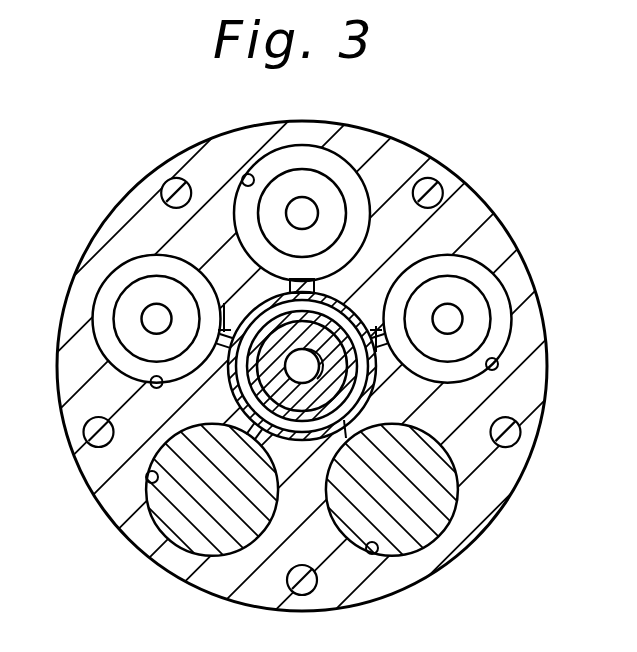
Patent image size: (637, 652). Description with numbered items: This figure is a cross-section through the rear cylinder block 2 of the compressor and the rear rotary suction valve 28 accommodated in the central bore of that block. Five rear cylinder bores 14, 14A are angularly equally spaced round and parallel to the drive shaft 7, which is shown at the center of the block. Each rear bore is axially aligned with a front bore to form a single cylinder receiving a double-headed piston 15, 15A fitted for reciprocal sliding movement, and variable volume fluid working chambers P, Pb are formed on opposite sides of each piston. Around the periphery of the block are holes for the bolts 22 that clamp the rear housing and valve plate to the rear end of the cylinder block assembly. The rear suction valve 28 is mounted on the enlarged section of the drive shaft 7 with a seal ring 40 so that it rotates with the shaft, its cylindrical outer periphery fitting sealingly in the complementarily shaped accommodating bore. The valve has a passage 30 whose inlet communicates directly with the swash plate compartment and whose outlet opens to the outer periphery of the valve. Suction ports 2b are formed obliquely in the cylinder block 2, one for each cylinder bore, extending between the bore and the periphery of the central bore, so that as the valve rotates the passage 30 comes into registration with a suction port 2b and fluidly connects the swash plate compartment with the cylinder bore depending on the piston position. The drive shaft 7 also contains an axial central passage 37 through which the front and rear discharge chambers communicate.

The rear cylinder block 2 is at (318, 326).
The suction port 2b is at (304, 372).
The drive shaft 7 is at (376, 383).
The rear cylinder bore 14 is at (319, 471).
The rear cylinder bore 14A is at (213, 147).
The double-headed piston 15 is at (318, 326).
The double-headed piston 15A is at (344, 181).
The bolt 22 is at (297, 387).
The rear rotary suction valve 28 is at (356, 457).
The passage 30 is at (318, 326).
The axial central passage 37 is at (288, 346).
The seal ring 40 is at (318, 326).
The working chamber P is at (112, 336).
The working chamber Pb is at (306, 275).